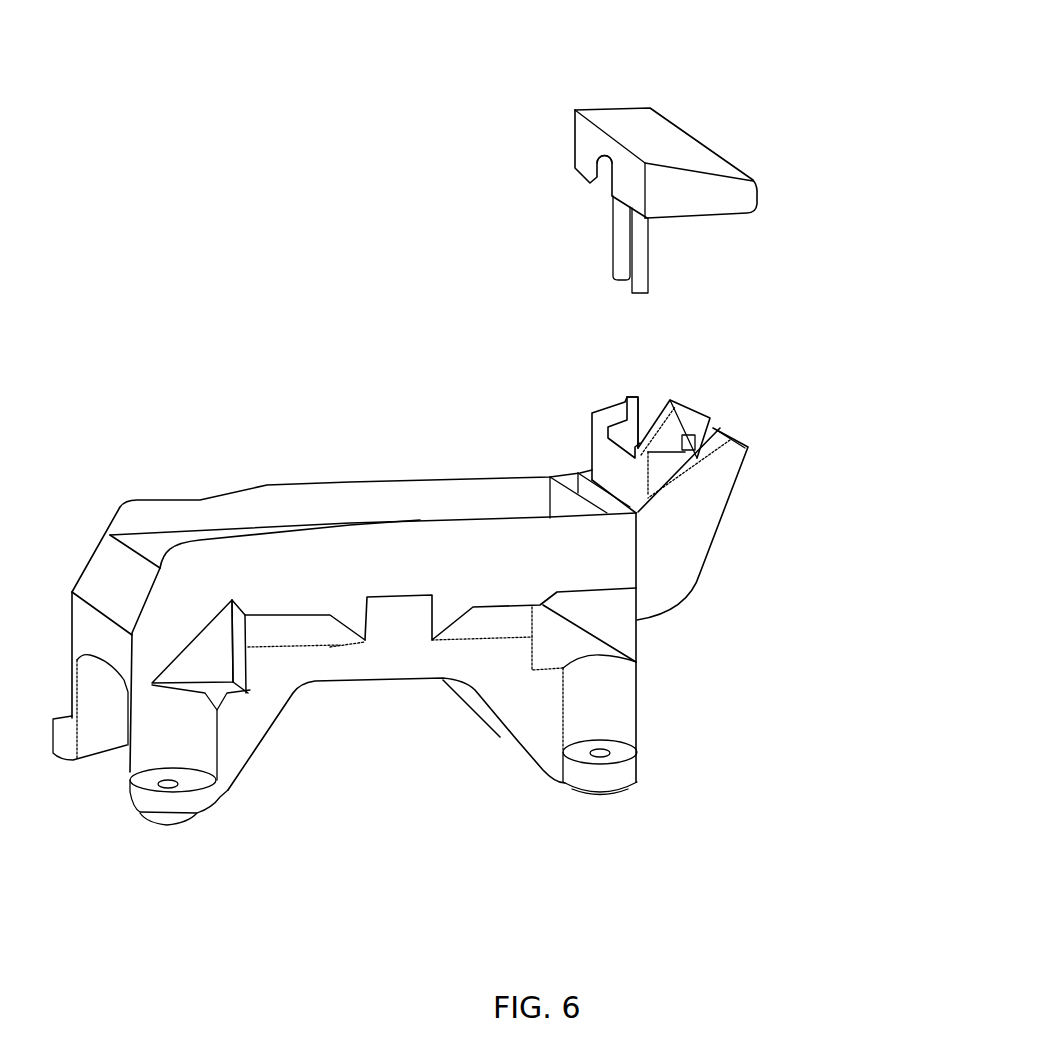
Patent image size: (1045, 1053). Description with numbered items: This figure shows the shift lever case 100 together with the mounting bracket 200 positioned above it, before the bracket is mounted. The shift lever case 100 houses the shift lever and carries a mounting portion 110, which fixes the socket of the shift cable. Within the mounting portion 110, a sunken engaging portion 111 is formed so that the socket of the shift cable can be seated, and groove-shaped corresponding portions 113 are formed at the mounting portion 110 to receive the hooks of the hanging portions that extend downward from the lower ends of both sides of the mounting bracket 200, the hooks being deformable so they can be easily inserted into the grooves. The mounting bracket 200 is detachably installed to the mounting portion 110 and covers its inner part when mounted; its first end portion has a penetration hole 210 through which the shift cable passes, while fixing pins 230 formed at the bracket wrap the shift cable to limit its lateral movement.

The shift lever case 100 is at (440, 574).
The mounting portion 110 is at (700, 471).
The engaging portion 111 is at (703, 450).
The corresponding portions 113 is at (632, 395).
The mounting bracket 200 is at (626, 152).
The penetration hole 210 is at (597, 182).
The fixing pins 230 is at (641, 265).